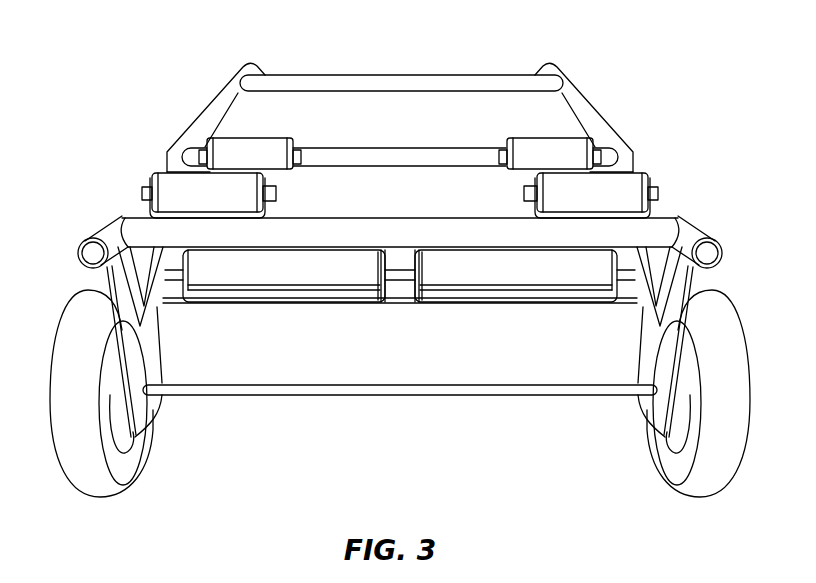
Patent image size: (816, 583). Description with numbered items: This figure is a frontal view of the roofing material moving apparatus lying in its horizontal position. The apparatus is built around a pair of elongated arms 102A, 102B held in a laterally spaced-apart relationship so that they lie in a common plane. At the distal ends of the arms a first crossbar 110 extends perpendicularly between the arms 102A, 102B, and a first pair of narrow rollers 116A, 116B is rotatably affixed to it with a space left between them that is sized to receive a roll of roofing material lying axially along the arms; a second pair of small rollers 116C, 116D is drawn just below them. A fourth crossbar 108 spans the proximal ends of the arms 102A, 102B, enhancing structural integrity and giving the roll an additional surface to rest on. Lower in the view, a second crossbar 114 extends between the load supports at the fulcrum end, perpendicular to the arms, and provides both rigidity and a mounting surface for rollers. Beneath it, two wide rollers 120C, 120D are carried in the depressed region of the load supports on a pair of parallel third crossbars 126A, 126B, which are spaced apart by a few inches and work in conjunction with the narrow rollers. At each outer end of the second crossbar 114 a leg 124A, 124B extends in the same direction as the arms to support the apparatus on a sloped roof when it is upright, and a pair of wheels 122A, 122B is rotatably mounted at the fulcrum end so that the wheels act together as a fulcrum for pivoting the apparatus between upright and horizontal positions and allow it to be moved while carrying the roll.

The fourth crossbar 108 is at (400, 80).
The arm 102A is at (205, 118).
The arm 102B is at (595, 118).
The first crossbar 110 is at (372, 155).
The first narrow roller 116A is at (260, 148).
The first narrow roller 116B is at (540, 148).
The lower left roller 116C is at (165, 185).
The lower right roller 116D is at (635, 188).
The second crossbar 114 is at (385, 230).
The leg 124A is at (100, 235).
The leg 124B is at (700, 237).
The wheel 122A is at (70, 330).
The wheel 122B is at (730, 330).
The wide roller 120C is at (248, 278).
The wide roller 120D is at (555, 278).
The third crossbar 126A is at (413, 285).
The third crossbar 126B is at (388, 300).